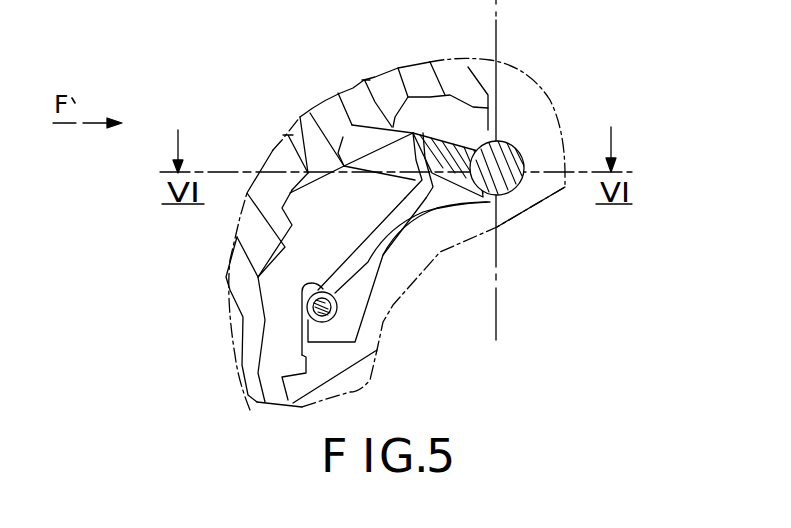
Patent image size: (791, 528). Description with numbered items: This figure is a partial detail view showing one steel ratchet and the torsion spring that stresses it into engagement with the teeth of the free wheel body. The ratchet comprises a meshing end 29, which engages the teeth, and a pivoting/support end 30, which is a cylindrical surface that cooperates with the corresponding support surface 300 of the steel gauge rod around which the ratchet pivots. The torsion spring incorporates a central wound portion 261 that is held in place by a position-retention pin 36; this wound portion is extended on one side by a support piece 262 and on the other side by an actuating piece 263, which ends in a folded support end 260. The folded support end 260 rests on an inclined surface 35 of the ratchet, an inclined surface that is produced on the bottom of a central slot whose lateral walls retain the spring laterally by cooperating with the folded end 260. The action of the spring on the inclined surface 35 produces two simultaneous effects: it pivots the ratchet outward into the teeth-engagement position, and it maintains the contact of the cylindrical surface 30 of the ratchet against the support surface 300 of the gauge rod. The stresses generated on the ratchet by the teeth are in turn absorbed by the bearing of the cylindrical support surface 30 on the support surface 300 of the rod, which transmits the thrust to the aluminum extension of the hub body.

The meshing end 29 is at (341, 128).
The pivoting/support end 30 is at (517, 192).
The inclined surface 35 is at (436, 140).
The support surface 300 is at (469, 140).
The folded support end 260 is at (410, 166).
The central wound portion 261 is at (345, 305).
The support piece 262 is at (290, 323).
The actuating piece 263 is at (357, 247).
The position-retention pin 36 is at (302, 290).